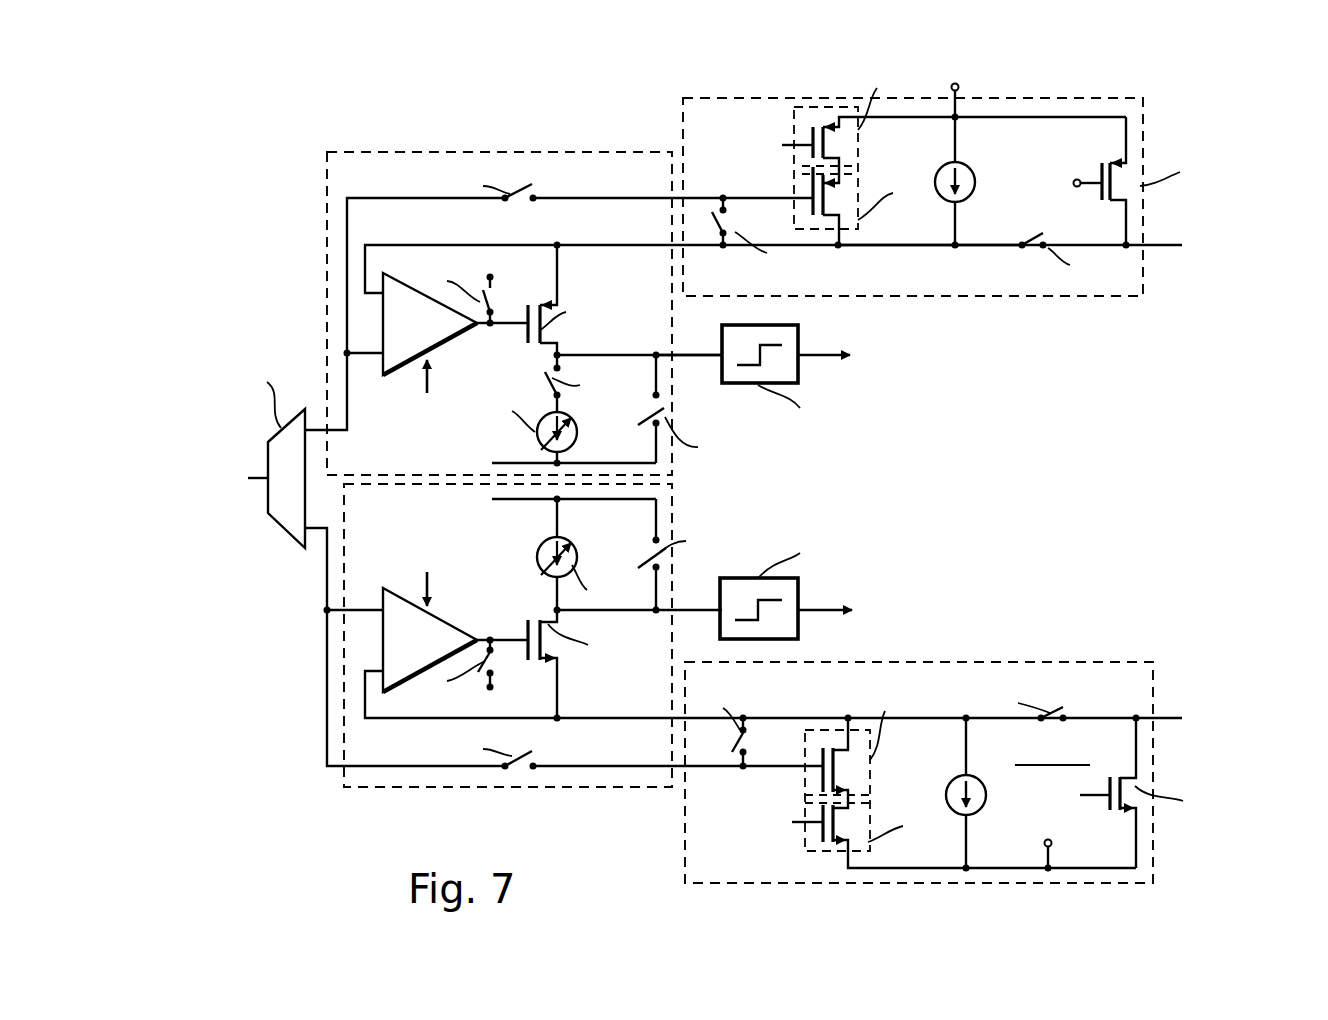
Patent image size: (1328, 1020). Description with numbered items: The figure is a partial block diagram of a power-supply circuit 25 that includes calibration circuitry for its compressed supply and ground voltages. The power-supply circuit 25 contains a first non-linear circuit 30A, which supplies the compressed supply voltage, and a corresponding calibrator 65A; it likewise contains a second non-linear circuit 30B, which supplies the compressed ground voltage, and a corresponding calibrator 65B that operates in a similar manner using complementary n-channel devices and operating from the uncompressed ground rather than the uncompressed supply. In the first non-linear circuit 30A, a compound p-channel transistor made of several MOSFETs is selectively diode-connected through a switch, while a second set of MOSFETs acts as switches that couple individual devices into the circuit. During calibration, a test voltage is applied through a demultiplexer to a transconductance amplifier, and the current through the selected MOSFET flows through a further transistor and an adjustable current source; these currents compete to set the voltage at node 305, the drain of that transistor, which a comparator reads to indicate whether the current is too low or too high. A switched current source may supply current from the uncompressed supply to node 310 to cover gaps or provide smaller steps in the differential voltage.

The power-supply circuit 25 is at (1284, 124).
The calibrator 65A is at (366, 153).
The calibrator 65B is at (550, 788).
The non-linear circuit 30A is at (1020, 298).
The non-linear circuit 30B is at (1065, 662).
The node 305 is at (692, 358).
The node 310 is at (900, 249).